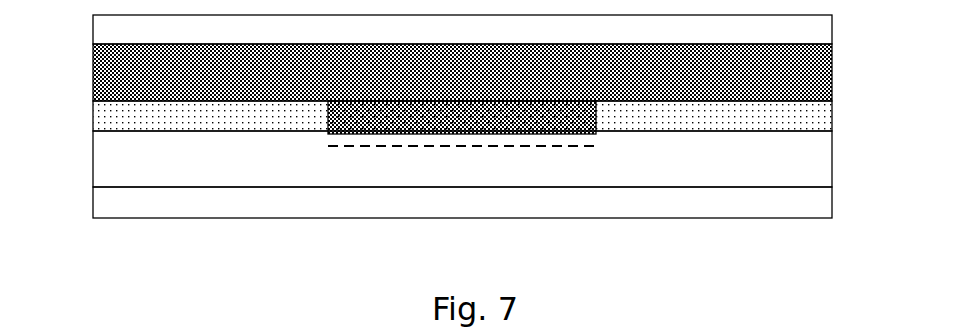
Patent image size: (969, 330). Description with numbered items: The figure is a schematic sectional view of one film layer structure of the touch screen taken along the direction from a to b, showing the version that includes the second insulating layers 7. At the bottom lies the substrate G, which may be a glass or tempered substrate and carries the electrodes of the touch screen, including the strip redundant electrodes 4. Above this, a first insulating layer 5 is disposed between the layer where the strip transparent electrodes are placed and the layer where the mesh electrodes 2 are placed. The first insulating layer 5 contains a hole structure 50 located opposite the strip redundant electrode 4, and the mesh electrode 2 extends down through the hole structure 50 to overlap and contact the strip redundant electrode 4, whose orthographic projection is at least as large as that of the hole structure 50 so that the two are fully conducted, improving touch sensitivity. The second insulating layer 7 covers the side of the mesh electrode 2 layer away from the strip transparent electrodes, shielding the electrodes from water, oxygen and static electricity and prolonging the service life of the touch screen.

The second insulating layer 7 is at (93, 33).
The mesh electrode 2 is at (93, 67).
The first insulating layer 5 is at (93, 120).
The hole structure 50 is at (596, 146).
The strip redundant electrode 4 is at (93, 170).
The substrate G is at (93, 216).